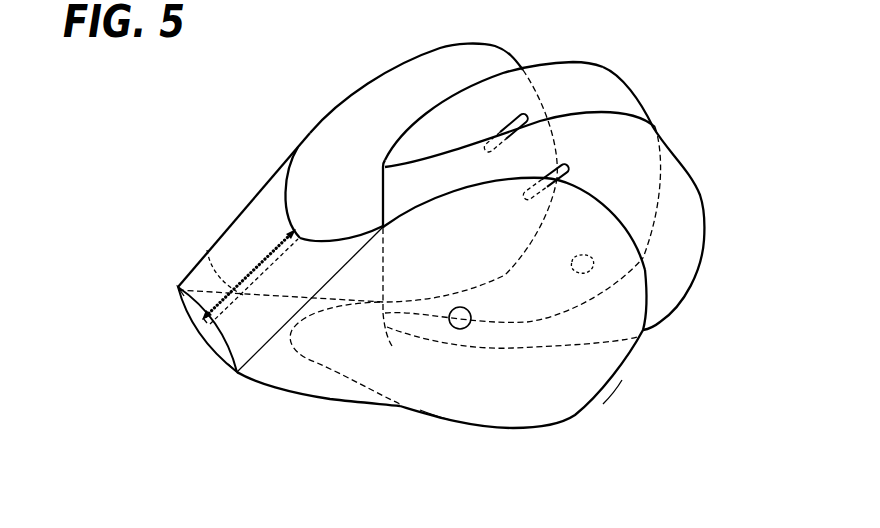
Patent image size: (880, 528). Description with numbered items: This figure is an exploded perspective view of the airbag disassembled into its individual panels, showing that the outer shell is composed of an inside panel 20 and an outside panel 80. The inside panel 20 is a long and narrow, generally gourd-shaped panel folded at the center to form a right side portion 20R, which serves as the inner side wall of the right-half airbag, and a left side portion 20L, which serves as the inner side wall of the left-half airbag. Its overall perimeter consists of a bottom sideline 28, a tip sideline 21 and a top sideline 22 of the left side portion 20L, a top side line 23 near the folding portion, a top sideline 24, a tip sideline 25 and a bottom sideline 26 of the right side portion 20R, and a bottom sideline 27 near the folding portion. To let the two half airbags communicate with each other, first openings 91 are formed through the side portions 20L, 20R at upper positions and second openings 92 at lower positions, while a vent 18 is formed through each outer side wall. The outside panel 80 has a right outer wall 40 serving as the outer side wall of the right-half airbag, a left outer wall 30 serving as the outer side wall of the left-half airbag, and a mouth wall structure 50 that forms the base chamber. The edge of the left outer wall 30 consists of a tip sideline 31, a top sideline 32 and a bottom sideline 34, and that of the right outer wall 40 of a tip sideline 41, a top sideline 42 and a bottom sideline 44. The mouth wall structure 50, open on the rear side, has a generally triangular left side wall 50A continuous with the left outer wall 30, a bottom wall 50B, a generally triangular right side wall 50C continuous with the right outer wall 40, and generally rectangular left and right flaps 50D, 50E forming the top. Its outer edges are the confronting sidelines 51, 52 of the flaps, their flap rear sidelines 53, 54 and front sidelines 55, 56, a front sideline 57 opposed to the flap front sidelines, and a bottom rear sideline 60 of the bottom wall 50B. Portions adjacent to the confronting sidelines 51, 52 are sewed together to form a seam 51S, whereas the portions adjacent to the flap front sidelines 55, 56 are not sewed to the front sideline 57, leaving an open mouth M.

The vent 18 is at (470, 325).
The inside panel 20 is at (634, 71).
The right side portion 20R is at (596, 80).
The left side portion 20L is at (687, 186).
The tip sideline 21 is at (706, 226).
The top sideline 22 is at (592, 113).
The top side line 23 is at (386, 164).
The top sideline 24 is at (478, 89).
The tip sideline 25 is at (656, 117).
The bottom sideline 26 is at (539, 317).
The bottom sideline 27 is at (392, 347).
The bottom sideline 28 is at (517, 349).
The left outer wall 30 is at (510, 431).
The tip sideline 31 is at (646, 297).
The top sideline 32 is at (428, 205).
The bottom sideline 34 is at (443, 419).
The right outer wall 40 is at (394, 60).
The tip sideline 41 is at (522, 55).
The top sideline 42 is at (350, 101).
The bottom sideline 44 is at (490, 282).
The mouth wall structure 50 is at (292, 412).
The left side wall 50A is at (263, 370).
The bottom wall 50B is at (221, 368).
The right side wall 50C is at (210, 233).
The left flap 50D is at (323, 250).
The right flap 50E is at (263, 195).
The confronting sideline 51 is at (267, 256).
The seam 51S is at (206, 251).
The confronting sideline 52 is at (276, 257).
The flap rear sideline 53 is at (333, 237).
The flap rear sideline 54 is at (292, 189).
The front sideline 55 is at (228, 337).
The front sideline 56 is at (178, 303).
The front sideline 57 is at (204, 345).
The bottom rear sideline 60 is at (310, 358).
The outside panel 80 is at (612, 403).
The first opening 91 is at (513, 122).
The second opening 92 is at (591, 256).
The open mouth M is at (189, 331).